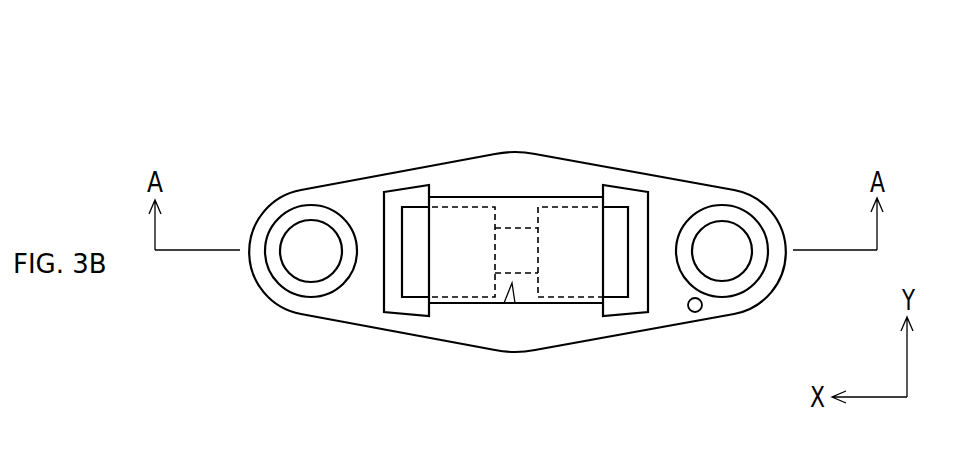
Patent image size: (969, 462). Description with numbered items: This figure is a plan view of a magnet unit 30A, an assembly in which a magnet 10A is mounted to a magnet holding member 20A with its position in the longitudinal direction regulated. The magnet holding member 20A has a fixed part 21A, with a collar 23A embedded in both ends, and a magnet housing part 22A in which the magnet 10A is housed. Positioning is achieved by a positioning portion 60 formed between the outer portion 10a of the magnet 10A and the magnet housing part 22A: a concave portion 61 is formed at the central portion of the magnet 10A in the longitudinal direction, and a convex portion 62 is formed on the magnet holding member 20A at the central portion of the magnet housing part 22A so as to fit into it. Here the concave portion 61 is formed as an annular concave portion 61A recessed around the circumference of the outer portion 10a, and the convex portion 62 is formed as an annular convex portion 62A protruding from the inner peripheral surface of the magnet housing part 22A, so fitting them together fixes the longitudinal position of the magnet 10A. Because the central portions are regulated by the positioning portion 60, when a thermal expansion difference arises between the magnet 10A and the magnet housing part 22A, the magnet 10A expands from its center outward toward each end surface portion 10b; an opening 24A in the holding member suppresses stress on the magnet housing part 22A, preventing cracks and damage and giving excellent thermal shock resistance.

The magnet unit 30A is at (641, 109).
The magnet holding member 20A is at (644, 168).
The fixed part 21A is at (357, 297).
The magnet housing part 22A is at (538, 305).
The collar 23A is at (302, 218).
The opening 24A is at (393, 200).
The magnet 10A is at (415, 205).
The outer portion 10a is at (577, 298).
The end surface portion 10b is at (413, 278).
The positioning portion 60 is at (509, 304).
The concave portion 61 is at (498, 228).
The annular concave portion 61A is at (471, 160).
The convex portion 62 is at (523, 215).
The annular convex portion 62A is at (561, 183).